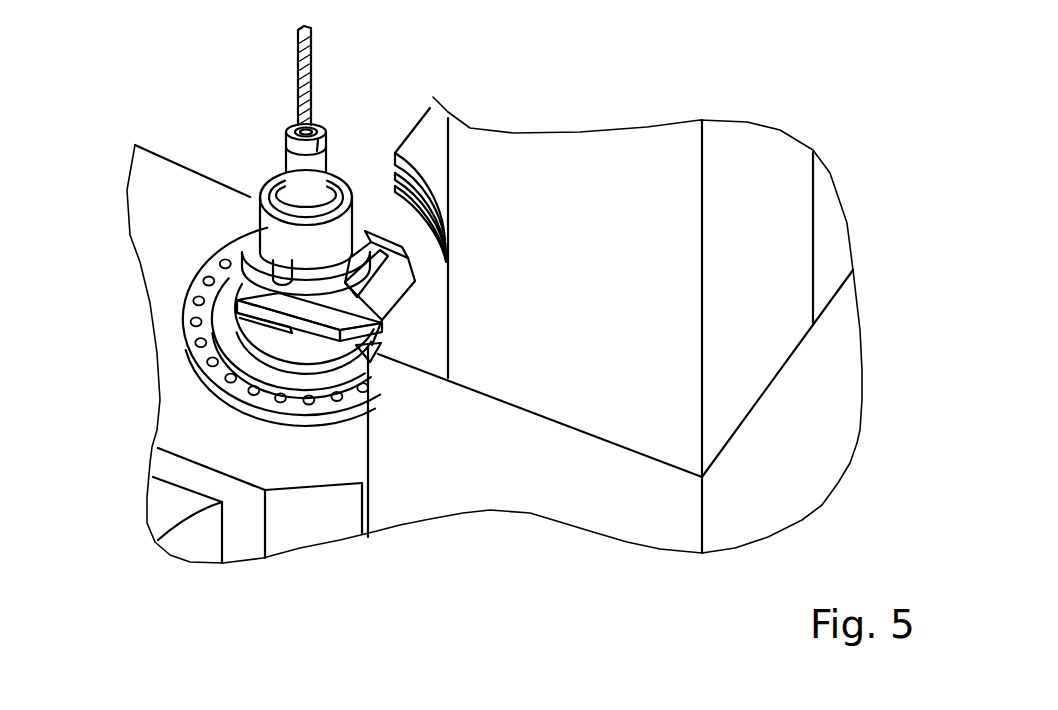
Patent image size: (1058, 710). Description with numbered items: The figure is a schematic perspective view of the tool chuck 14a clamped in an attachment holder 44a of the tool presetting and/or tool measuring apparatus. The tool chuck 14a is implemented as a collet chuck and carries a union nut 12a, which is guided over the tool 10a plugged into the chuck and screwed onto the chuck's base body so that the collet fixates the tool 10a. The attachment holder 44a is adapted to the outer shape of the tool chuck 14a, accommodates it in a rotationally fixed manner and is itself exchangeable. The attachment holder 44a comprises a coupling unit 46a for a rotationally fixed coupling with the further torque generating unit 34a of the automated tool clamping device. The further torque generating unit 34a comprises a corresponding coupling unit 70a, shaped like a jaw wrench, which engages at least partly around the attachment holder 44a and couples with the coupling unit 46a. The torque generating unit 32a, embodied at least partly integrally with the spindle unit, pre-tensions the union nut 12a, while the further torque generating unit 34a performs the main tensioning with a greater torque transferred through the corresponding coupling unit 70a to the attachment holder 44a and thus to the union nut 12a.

The tool 10a is at (294, 70).
The union nut 12a is at (324, 128).
The tool chuck 14a is at (258, 158).
The torque generating unit 32a is at (200, 392).
The further torque generating unit 34a is at (414, 268).
The attachment holder 44a is at (254, 256).
The coupling unit 46a is at (228, 286).
The corresponding coupling unit 70a is at (383, 310).